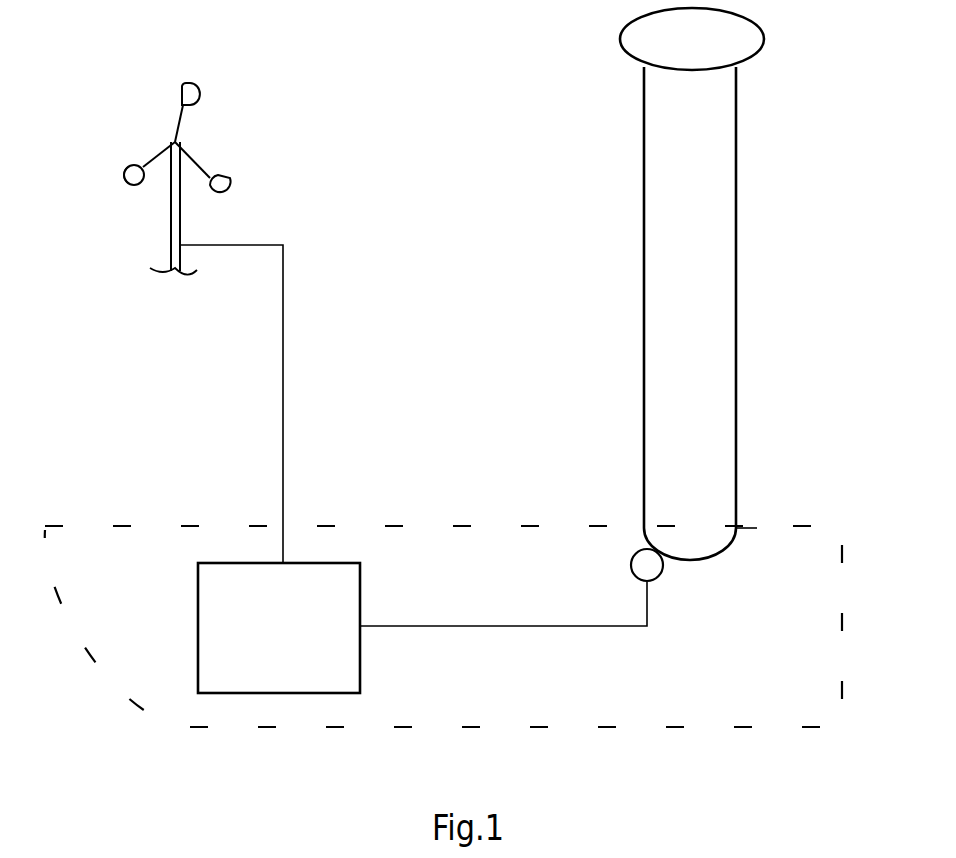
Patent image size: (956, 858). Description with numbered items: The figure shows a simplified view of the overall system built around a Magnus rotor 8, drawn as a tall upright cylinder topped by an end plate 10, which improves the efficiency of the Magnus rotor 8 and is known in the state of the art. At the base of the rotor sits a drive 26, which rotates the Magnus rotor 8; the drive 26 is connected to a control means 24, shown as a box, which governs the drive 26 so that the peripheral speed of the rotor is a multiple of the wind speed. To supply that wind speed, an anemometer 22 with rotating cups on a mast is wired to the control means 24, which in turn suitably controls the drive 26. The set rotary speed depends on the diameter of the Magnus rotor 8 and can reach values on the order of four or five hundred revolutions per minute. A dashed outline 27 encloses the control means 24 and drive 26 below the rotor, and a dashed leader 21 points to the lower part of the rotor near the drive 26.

The Magnus rotor 8 is at (681, 246).
The end plate 10 is at (680, 54).
The tube wall 21 is at (757, 529).
The anemometer 22 is at (205, 149).
The control means 24 is at (261, 645).
The drive 26 is at (651, 568).
The housing 27 is at (811, 502).